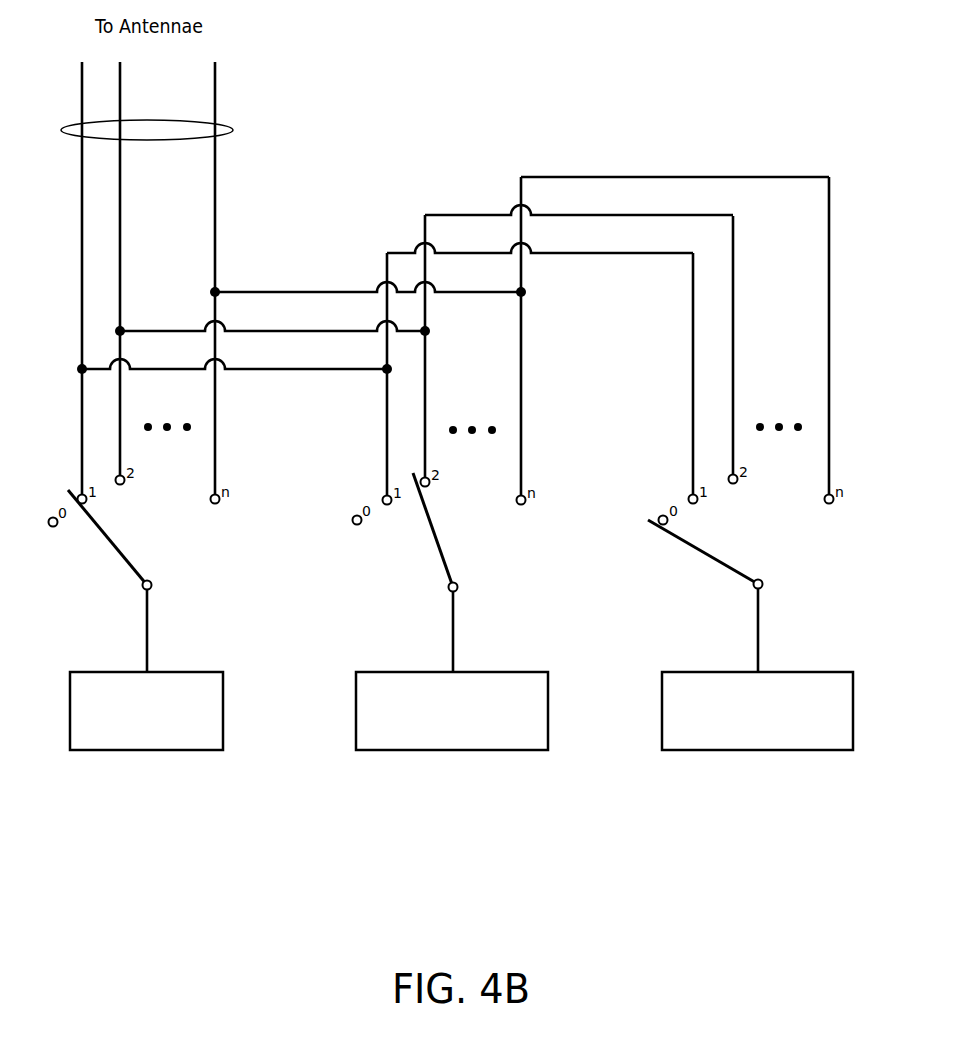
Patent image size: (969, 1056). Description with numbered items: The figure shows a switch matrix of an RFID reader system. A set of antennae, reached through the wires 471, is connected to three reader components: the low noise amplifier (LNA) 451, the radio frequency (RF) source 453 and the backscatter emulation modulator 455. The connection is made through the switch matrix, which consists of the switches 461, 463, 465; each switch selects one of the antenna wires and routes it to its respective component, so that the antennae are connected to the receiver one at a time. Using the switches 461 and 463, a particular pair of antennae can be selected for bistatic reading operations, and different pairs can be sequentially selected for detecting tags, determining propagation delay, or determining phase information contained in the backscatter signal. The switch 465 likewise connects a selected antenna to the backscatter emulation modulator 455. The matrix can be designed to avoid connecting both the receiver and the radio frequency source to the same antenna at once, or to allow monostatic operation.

The wires 471 is at (233, 130).
The switch 461 is at (117, 547).
The switch 463 is at (440, 553).
The switch 465 is at (708, 553).
The low noise amplifier (LNA) 451 is at (183, 672).
The radio frequency (RF) source 453 is at (528, 672).
The backscatter emulation modulator 455 is at (830, 672).